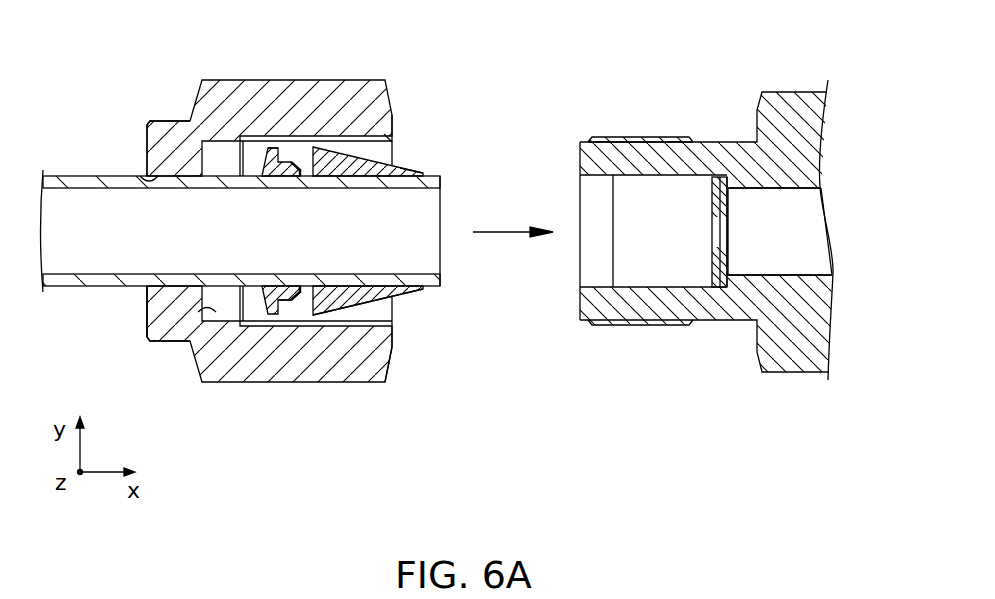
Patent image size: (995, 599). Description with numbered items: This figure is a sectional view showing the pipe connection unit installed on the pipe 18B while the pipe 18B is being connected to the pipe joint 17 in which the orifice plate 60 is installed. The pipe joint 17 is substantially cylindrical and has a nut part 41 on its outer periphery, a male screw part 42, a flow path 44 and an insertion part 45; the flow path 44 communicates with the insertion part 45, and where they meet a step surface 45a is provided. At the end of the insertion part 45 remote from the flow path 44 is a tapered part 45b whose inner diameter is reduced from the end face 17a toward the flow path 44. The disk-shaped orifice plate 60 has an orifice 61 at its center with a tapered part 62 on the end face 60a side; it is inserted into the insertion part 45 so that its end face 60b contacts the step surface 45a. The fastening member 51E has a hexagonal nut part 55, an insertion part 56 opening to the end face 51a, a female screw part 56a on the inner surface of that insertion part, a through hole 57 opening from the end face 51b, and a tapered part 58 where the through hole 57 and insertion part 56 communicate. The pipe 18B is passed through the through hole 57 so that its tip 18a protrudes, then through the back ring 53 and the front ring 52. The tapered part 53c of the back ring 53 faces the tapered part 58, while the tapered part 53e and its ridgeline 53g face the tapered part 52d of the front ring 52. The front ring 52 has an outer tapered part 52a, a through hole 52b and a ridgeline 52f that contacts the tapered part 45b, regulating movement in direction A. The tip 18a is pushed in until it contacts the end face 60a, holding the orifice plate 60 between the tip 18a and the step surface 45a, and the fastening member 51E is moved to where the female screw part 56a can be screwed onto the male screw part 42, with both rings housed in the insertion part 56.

The fastening member 51E is at (140, 98).
The pipe 18B is at (100, 284).
The tip 18a is at (442, 208).
The nut part 55 is at (358, 90).
The insertion part 56 is at (212, 157).
The female screw part 56a is at (392, 147).
The tapered part 52a is at (408, 157).
The end face 51a is at (393, 343).
The end face 51b is at (147, 325).
The front ring 52 is at (378, 295).
The through hole 52b is at (378, 293).
The ridgeline 52f is at (425, 172).
The tapered part 52d is at (306, 158).
The back ring 53 is at (277, 311).
The tapered part 53c is at (245, 163).
The tapered part 53e is at (297, 293).
The ridgeline 53g is at (307, 295).
The through hole 57 is at (142, 176).
The tapered part 58 is at (204, 312).
The pipe joint 17 is at (645, 95).
The male screw part 42 is at (650, 325).
The end face 17a is at (578, 320).
The tapered part 45b is at (612, 175).
The insertion part 45 is at (637, 252).
The step surface 45a is at (717, 290).
The tapered part 62 is at (712, 255).
The nut part 41 is at (790, 367).
The flow path 44 is at (813, 216).
The end face 60a is at (735, 190).
The end face 60b is at (727, 240).
The orifice plate 60 is at (727, 266).
The orifice 61 is at (805, 205).